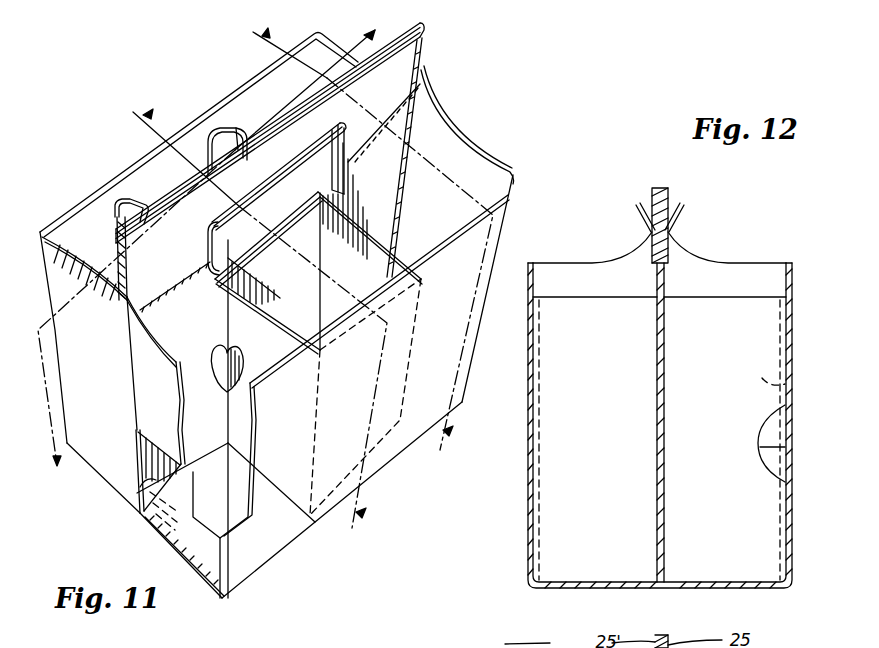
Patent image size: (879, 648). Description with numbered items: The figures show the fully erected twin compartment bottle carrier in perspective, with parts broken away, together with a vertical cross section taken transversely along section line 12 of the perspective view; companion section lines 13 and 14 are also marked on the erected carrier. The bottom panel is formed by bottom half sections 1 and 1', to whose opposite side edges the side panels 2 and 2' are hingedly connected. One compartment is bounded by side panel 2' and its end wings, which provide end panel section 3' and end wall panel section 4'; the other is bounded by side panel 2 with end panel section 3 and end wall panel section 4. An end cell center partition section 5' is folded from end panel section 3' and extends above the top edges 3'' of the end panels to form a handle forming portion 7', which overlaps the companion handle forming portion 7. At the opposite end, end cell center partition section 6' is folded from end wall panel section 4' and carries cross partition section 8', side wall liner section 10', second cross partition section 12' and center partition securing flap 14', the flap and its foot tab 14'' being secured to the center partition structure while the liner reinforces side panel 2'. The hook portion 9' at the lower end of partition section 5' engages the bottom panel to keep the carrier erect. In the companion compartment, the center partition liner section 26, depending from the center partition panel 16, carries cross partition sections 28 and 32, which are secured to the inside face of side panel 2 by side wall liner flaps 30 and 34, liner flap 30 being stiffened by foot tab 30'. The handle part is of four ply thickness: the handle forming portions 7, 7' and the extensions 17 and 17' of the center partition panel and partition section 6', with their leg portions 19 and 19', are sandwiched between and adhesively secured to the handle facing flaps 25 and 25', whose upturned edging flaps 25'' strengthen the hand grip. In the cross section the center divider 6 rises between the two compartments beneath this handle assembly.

In FIG. 12, the bottom half section 1 is at (660, 601).
In FIG. 11, the bottom half section 1' is at (145, 520).
In FIG. 12, the bottom half section 1' is at (595, 603).
In FIG. 11, the side panel 2 is at (199, 135).
In FIG. 12, the side panel 2 is at (645, 425).
In FIG. 11, the side panel 2' is at (351, 396).
In FIG. 11, the end panel section 3 is at (88, 337).
In FIG. 12, the end panel section 3 is at (725, 266).
In FIG. 11, the end panel section 3' is at (168, 457).
In FIG. 12, the end panel section 3' is at (595, 266).
In FIG. 12, the top edges of end panel sections 3'' is at (660, 244).
In FIG. 11, the end wall panel section 4 is at (336, 34).
In FIG. 11, the end wall panel section 4' is at (433, 234).
In FIG. 11, the end cell center partition section 5' is at (124, 501).
In FIG. 12, the divider partition 6 is at (677, 422).
In FIG. 11, the end cell center partition section 6' is at (370, 233).
In FIG. 12, the end cell center partition section 6' is at (638, 360).
In FIG. 11, the handle forming portion 7 is at (105, 226).
In FIG. 11, the handle forming portion 7' is at (165, 243).
In FIG. 11, the cross partition section 8' is at (365, 354).
In FIG. 12, the cross partition section 8' is at (597, 416).
In FIG. 11, the hook portion 9' is at (149, 525).
In FIG. 11, the side wall liner section 10' is at (423, 343).
In FIG. 12, the side wall liner section 10' is at (659, 440).
In FIG. 11, the section line 12— 12 is at (372, 233).
In FIG. 11, the cross partition section 12' is at (226, 419).
In FIG. 11, the section line 13- 13 is at (257, 313).
In FIG. 11, the section line 14- 14 is at (215, 256).
In FIG. 11, the center partition securing flap 14' is at (270, 283).
In FIG. 11, the foot tab 14'' is at (216, 362).
In FIG. 11, the center partition panel 16 is at (303, 272).
In FIG. 11, the handle forming portion 17 is at (287, 128).
In FIG. 12, the handle forming portion 17 is at (679, 211).
In FIG. 11, the handle forming portion 17' is at (434, 157).
In FIG. 12, the handle forming portion 17' is at (635, 203).
In FIG. 12, the handle forming leg portion 19 is at (680, 629).
In FIG. 12, the handle forming leg portion 19' is at (640, 630).
In FIG. 11, the handle facing flap 25 is at (187, 191).
In FIG. 12, the handle facing flap 25 is at (727, 220).
In FIG. 11, the handle facing flap 25' is at (309, 195).
In FIG. 12, the handle facing flap 25' is at (592, 217).
In FIG. 11, the upturned edging flap 25'' is at (289, 191).
In FIG. 12, the upturned edging flap 25'' is at (665, 217).
In FIG. 11, the center partition liner section 26 is at (270, 232).
In FIG. 11, the cross partition section 28 is at (236, 148).
In FIG. 12, the cross partition section 28 is at (702, 425).
In FIG. 11, the side wall liner flap 30 is at (208, 120).
In FIG. 12, the side wall liner flap 30 is at (763, 371).
In FIG. 12, the foot tab 30' is at (756, 443).
In FIG. 11, the cross partition section 32 is at (146, 206).
In FIG. 11, the side wall liner flap 34 is at (122, 203).